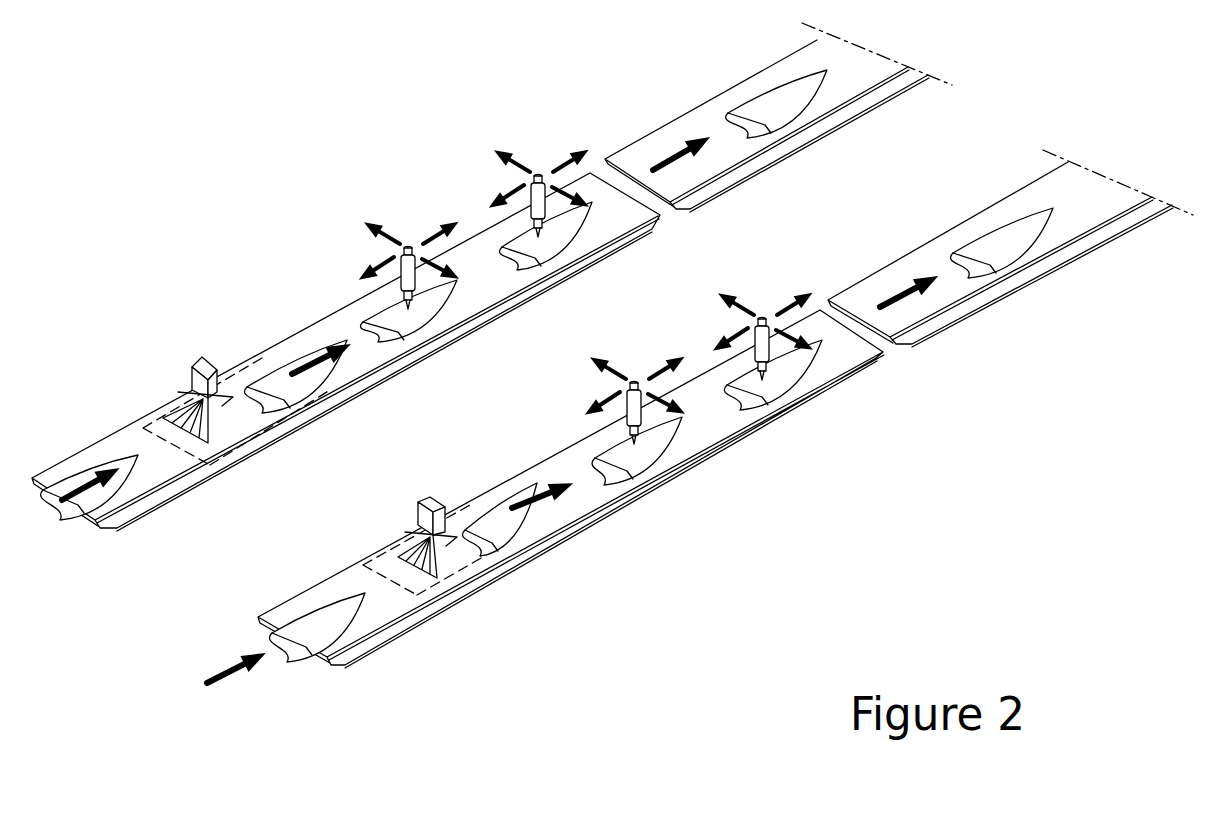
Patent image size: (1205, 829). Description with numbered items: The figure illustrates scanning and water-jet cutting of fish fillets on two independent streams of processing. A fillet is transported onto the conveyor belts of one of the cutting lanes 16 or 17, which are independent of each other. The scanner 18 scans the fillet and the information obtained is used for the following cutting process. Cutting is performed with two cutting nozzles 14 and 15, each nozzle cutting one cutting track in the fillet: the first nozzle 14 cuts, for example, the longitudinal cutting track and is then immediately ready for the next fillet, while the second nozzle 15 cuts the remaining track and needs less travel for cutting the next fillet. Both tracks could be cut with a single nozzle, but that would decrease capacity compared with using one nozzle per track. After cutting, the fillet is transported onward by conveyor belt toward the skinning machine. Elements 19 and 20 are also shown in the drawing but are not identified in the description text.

The first cutting nozzle 14 is at (638, 420).
The second cutting nozzle 15 is at (765, 357).
The cutting lane 16 is at (340, 608).
The cutting lane 17 is at (353, 662).
The scanner 18 is at (140, 518).
The spray device 19 is at (453, 547).
The strip section 20 is at (1027, 290).